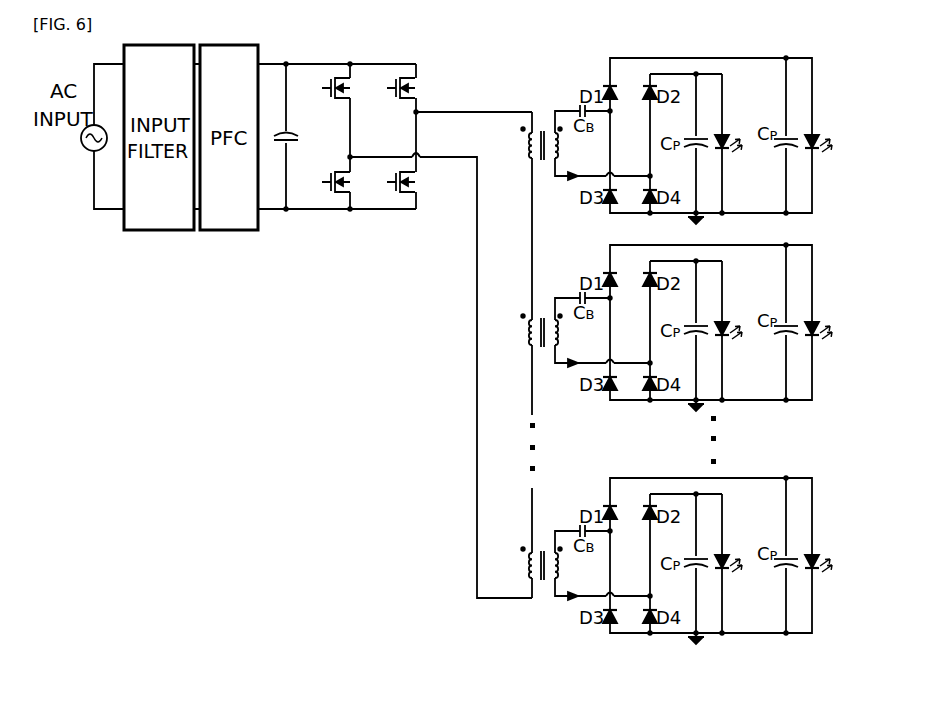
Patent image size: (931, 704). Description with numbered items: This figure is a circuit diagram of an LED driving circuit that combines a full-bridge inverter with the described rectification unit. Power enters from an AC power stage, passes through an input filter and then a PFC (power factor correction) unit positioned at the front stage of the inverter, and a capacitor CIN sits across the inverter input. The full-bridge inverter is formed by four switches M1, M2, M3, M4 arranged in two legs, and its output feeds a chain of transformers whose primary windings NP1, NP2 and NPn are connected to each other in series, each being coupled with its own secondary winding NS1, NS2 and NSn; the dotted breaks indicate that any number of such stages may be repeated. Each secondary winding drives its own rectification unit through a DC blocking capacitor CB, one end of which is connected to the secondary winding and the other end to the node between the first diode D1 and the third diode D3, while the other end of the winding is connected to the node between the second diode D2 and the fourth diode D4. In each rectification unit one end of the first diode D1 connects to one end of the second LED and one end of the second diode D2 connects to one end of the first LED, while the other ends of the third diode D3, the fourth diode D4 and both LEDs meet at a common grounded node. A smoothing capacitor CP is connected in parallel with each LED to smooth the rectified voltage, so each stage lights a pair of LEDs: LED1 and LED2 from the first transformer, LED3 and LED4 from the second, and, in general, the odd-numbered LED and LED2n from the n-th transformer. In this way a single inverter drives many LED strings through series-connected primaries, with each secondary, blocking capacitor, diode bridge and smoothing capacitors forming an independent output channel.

The input capacitor CIN is at (301, 136).
The first switching transistor of full bridge M1 is at (324, 110).
The second switching transistor of full bridge M2 is at (389, 174).
The third switching transistor of full bridge M3 is at (324, 183).
The fourth switching transistor of full bridge M4 is at (389, 102).
The primary winding of first transformer NP1 is at (511, 142).
The secondary winding of first transformer NS1 is at (575, 142).
The primary winding of second transformer NP2 is at (511, 329).
The secondary winding of second transformer NS2 is at (575, 329).
The primary winding of n-th transformer NPn is at (511, 562).
The secondary winding of n-th transformer NSn is at (575, 562).
The DC blocking capacitor CB is at (584, 330).
The first diode D1 is at (598, 306).
The second diode D2 is at (662, 306).
The third diode D3 is at (598, 407).
The fourth diode D4 is at (662, 407).
The smoothing capacitor CP is at (729, 348).
The first LED string LED1 is at (743, 153).
The second LED string LED2 is at (834, 153).
The third LED string LED3 is at (743, 340).
The fourth LED string LED4 is at (834, 340).
The 2n-th LED string LED2n is at (841, 573).